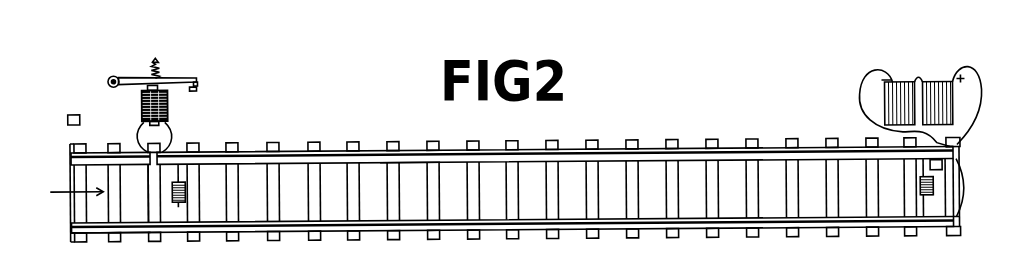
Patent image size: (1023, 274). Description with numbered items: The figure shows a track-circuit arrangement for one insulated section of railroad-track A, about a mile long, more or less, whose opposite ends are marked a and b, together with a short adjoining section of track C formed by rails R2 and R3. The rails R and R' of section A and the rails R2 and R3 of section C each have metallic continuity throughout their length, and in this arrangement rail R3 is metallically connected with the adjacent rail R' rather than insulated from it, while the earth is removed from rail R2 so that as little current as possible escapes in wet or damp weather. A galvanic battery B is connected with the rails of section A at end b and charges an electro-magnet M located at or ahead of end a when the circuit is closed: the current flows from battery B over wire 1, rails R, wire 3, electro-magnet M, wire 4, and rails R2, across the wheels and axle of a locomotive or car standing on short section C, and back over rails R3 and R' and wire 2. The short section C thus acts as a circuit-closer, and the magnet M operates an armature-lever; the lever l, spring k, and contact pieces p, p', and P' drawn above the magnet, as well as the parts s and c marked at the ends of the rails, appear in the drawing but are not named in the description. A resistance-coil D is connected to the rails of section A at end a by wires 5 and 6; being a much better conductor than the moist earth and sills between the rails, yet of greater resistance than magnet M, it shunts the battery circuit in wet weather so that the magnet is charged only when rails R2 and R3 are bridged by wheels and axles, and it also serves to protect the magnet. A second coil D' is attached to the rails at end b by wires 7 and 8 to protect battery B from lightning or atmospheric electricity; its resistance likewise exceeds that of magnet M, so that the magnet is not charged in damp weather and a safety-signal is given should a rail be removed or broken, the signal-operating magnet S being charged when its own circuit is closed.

The lever l is at (152, 76).
The spring k is at (160, 68).
The contact p is at (202, 76).
The contact p' is at (203, 96).
The contact plate P' is at (84, 114).
The electro-magnet M is at (145, 105).
The wire 3 is at (170, 137).
The wire 4 is at (139, 137).
The signal-operating magnet S is at (111, 192).
The rail end s is at (954, 149).
The rail R2 is at (110, 149).
The rails R is at (555, 144).
The rails R' is at (513, 235).
The rail R3 is at (111, 243).
The insulated section of railroad-track A is at (410, 181).
The galvanic battery B is at (923, 87).
The wire 1 is at (970, 105).
The wire 2 is at (904, 143).
The short section of track C is at (76, 202).
The end of section of track a is at (152, 193).
The resistance-coil D is at (173, 186).
The coil D' is at (931, 177).
The wire 5 is at (181, 210).
The wire 6 is at (181, 173).
The wire 7 is at (921, 167).
The wire 8 is at (922, 206).
The end of section of track b is at (963, 187).
The rail connection c is at (514, 231).